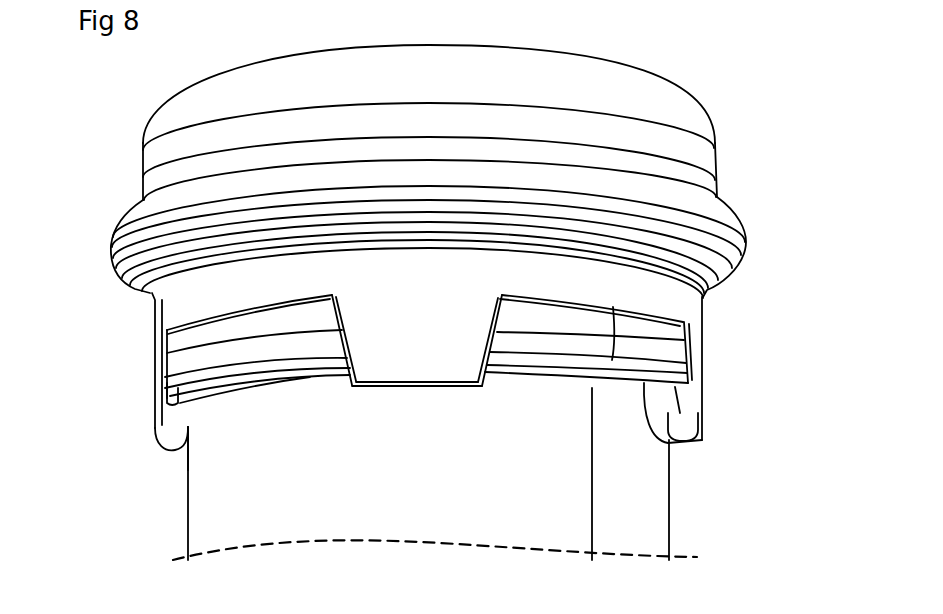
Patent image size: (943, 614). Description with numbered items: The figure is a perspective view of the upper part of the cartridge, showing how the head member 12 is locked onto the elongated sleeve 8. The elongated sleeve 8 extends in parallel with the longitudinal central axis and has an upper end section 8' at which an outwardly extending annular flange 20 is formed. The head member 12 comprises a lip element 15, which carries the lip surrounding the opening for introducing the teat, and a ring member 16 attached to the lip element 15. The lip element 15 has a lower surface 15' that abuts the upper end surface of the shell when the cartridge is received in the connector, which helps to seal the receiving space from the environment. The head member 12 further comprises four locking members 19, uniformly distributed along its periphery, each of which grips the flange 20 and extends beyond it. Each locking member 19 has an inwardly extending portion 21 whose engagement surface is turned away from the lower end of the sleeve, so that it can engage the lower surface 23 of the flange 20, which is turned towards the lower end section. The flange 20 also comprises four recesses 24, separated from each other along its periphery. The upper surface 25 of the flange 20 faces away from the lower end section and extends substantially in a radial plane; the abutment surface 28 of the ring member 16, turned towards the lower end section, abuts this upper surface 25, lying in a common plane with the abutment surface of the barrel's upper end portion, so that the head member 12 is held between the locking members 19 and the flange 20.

The head member 12 is at (698, 95).
The lip element 15 is at (372, 174).
The lower surface 15' is at (468, 242).
The ring member 16 is at (667, 300).
The flange 20 is at (657, 337).
The locking members 19 is at (440, 345).
The inwardly extending portion 21 is at (678, 408).
The lower surface 23 is at (702, 441).
The recesses 24 is at (343, 320).
The upper surface 25 is at (222, 313).
The abutment surface 28 is at (183, 328).
The elongated sleeve 8 is at (487, 474).
The upper end section 8' is at (135, 442).